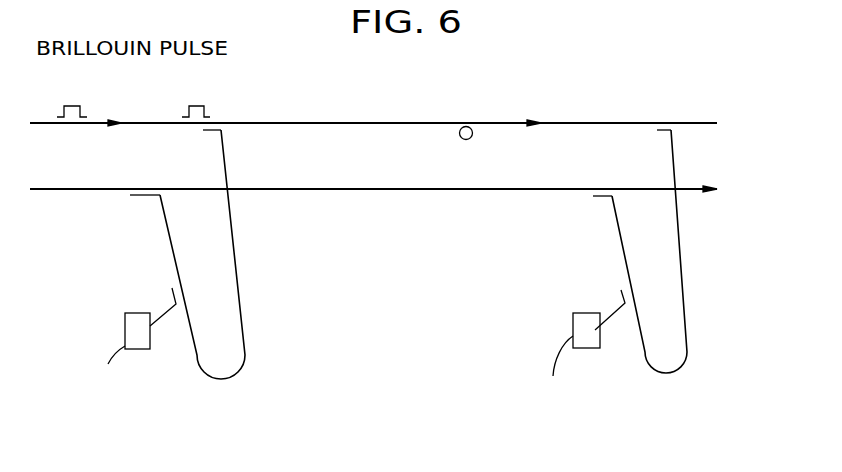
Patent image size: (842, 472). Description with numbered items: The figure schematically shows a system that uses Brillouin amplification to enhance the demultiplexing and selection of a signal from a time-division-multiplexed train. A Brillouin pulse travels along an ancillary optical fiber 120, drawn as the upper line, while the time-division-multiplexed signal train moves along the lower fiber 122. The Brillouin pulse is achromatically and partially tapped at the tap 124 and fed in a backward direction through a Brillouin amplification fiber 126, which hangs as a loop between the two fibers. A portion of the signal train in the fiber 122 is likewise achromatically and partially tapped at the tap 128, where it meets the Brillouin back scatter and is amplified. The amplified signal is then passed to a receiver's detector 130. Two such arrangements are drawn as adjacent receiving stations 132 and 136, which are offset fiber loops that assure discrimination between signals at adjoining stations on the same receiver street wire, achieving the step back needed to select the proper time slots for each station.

The ancillary optical fiber 120 is at (135, 121).
The fiber 122 is at (60, 191).
The tap 124 is at (226, 128).
The Brillouin amplification fiber 126 is at (172, 258).
The tap 128 is at (131, 195).
The detector 130 is at (125, 326).
The receiving station 132 is at (255, 259).
The receiving station 136 is at (556, 252).